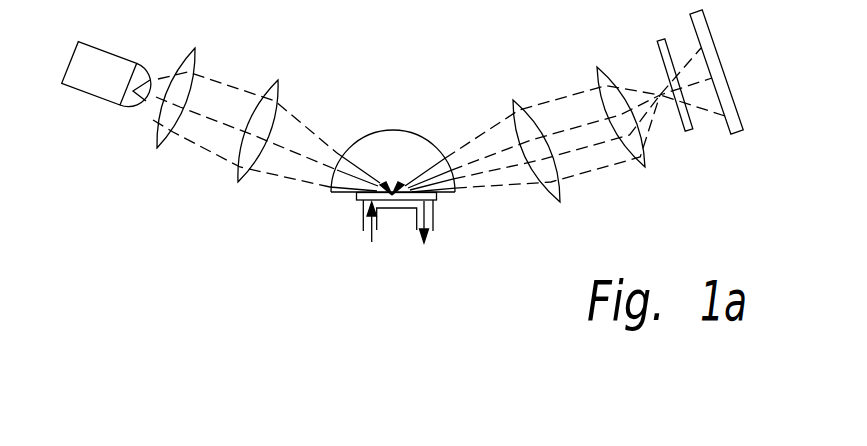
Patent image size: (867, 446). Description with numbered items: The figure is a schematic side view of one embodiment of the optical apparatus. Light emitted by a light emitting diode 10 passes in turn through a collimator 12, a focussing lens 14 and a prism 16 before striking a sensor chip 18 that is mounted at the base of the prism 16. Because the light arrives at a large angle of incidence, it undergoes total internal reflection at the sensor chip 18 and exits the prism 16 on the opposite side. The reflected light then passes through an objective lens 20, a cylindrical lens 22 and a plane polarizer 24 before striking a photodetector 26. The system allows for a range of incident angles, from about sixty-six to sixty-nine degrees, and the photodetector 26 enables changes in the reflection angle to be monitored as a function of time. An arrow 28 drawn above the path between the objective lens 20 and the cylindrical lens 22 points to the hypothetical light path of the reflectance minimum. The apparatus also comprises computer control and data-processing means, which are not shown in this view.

The light emitting diode 10 is at (95, 90).
The collimator 12 is at (155, 148).
The focussing lens 14 is at (237, 185).
The prism 16 is at (376, 132).
The sensor chip 18 is at (357, 197).
The objective lens 20 is at (558, 200).
The cylindrical lens 22 is at (645, 167).
The plane polarizer 24 is at (688, 133).
The photodetector 26 is at (735, 135).
The arrow 28 is at (587, 122).